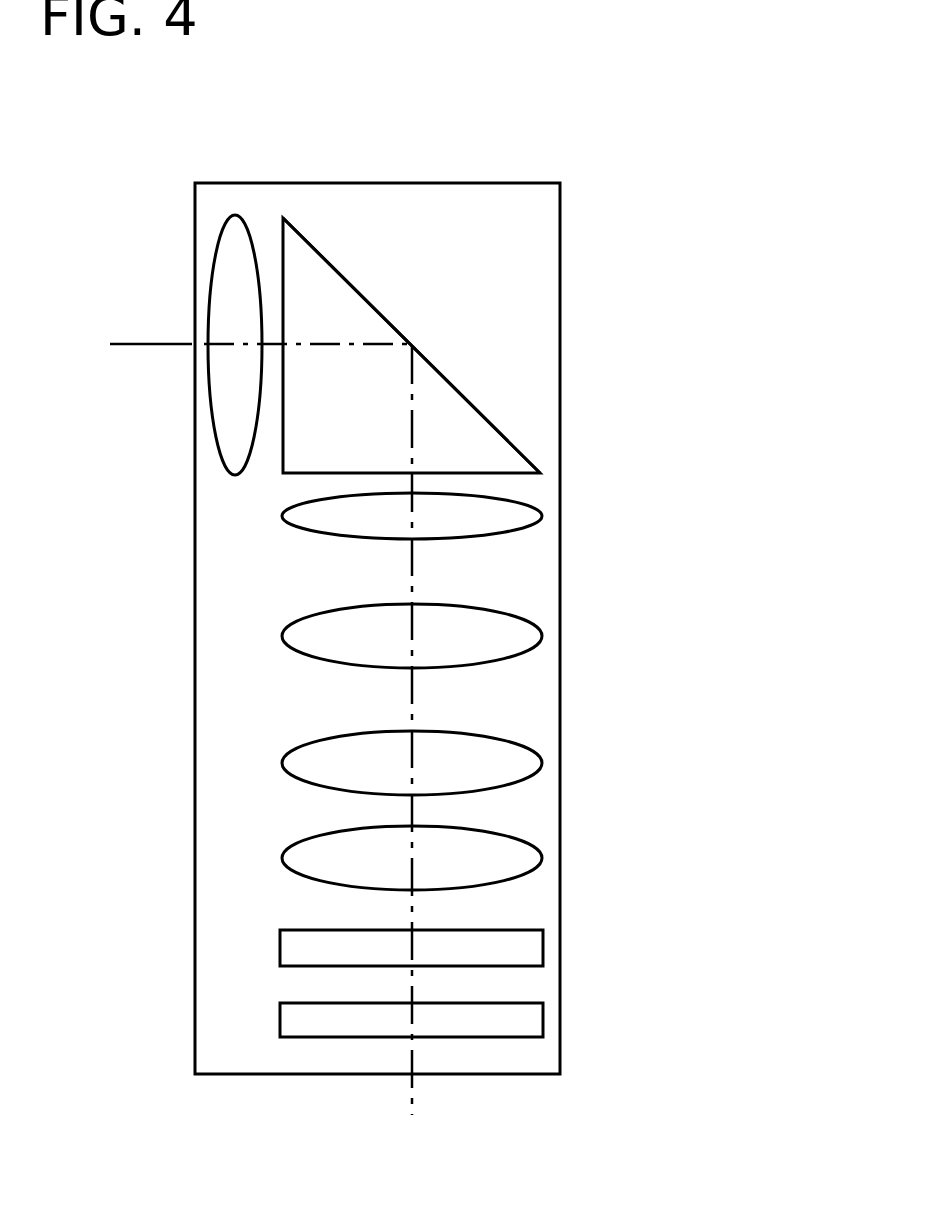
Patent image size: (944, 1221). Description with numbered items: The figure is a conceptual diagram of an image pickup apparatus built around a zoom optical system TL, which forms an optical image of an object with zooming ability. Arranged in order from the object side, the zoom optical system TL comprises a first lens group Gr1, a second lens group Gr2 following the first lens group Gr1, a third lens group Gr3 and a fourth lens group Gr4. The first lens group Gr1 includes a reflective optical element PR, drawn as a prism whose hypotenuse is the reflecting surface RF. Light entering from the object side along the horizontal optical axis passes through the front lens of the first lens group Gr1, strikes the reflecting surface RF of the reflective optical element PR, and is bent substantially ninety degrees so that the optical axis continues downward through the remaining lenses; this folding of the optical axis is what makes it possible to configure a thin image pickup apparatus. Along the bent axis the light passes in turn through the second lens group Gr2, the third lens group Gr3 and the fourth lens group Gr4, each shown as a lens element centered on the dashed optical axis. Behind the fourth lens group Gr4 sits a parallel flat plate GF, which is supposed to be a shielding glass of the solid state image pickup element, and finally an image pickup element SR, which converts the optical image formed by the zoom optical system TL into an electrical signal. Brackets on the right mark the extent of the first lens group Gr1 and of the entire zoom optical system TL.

The zoom optical system TL is at (757, 217).
The first lens group Gr1 is at (461, 377).
The reflective optical element PR is at (309, 271).
The reflecting surface RF is at (384, 318).
The second lens group Gr2 is at (542, 636).
The third lens group Gr3 is at (542, 763).
The fourth lens group Gr4 is at (542, 858).
The parallel flat plate GF is at (543, 946).
The image pickup element SR is at (543, 1018).